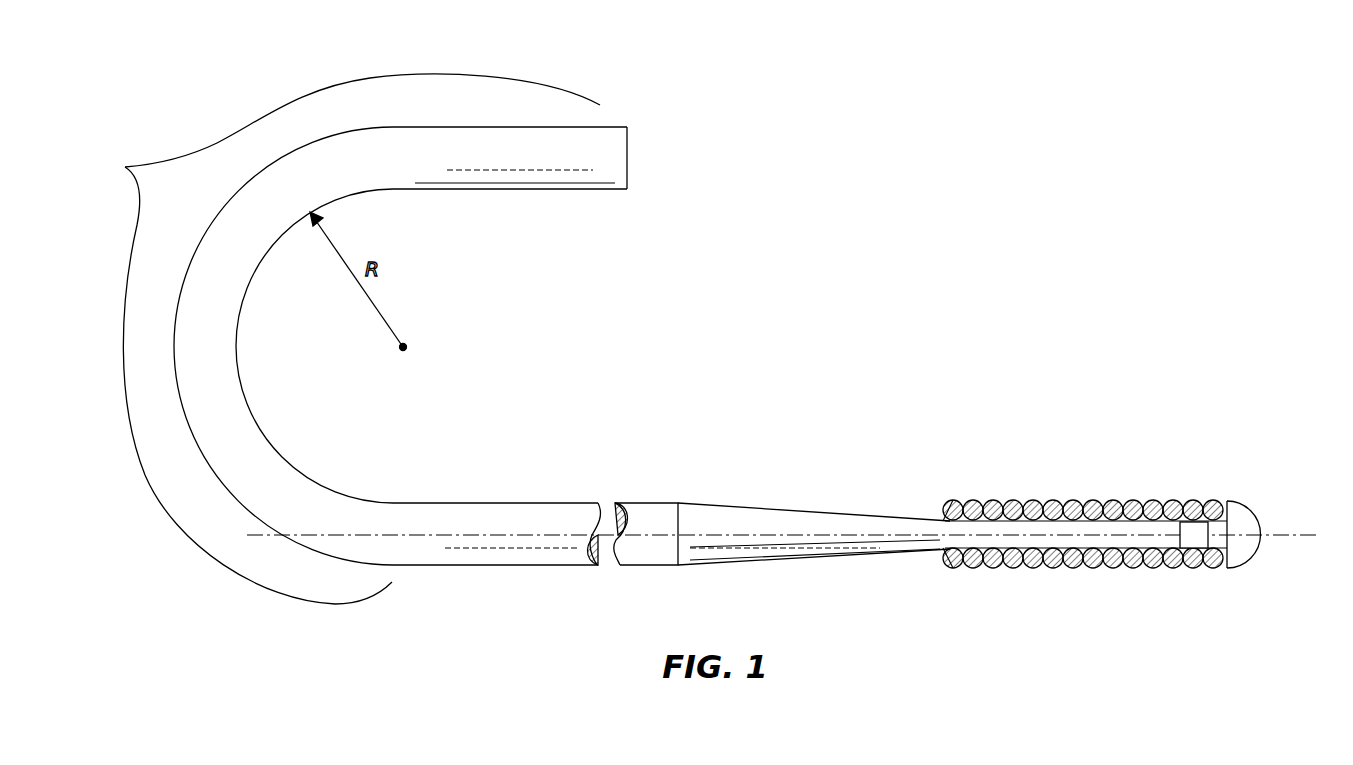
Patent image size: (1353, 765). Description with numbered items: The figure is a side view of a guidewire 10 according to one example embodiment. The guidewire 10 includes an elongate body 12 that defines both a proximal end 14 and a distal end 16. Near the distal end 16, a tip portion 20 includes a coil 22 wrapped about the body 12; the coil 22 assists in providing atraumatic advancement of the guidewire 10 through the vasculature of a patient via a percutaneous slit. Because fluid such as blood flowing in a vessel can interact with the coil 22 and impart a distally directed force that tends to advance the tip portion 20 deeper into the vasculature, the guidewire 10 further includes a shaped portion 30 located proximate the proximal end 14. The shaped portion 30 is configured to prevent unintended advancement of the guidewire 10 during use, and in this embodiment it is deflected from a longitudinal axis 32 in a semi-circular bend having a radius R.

The guidewire 10 is at (661, 436).
The elongate body 12 is at (494, 505).
The proximal end 14 is at (608, 127).
The distal end 16 is at (1267, 521).
The tip portion 20 is at (1128, 455).
The coil 22 is at (963, 497).
The shaped portion 30 is at (341, 339).
The longitudinal axis 32 is at (449, 540).